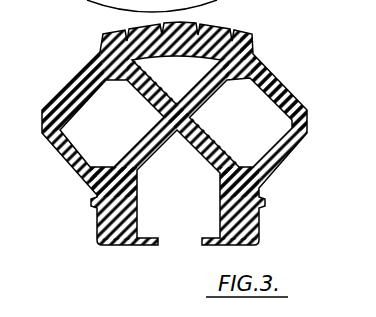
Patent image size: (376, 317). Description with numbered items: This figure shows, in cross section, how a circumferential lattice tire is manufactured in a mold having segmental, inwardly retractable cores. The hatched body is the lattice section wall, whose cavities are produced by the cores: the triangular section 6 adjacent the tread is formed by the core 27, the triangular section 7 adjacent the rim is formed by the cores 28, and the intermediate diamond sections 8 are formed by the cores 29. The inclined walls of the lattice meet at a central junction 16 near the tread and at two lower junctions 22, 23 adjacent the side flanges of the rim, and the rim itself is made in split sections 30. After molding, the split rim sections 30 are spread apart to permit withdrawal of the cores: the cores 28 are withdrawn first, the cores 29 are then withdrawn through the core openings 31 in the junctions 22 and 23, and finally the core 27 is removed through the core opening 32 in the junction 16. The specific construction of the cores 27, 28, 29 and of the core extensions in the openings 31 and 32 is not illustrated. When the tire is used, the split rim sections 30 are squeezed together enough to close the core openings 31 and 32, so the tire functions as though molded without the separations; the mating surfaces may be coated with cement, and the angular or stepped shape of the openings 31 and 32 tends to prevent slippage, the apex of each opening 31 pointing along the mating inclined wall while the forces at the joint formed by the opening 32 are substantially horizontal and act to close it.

The triangular circumferential core 6 is at (207, 29).
The triangular circumferential core 7 is at (191, 179).
The diamond circumferential passage 8 is at (270, 108).
The junction 16 is at (163, 118).
The junction 22 is at (137, 190).
The junction 23 is at (220, 188).
The core 27 is at (251, 47).
The core 28 is at (163, 192).
The core 29 is at (90, 110).
The split rim section 30 is at (115, 243).
The core opening 31 is at (107, 180).
The core opening 32 is at (192, 117).